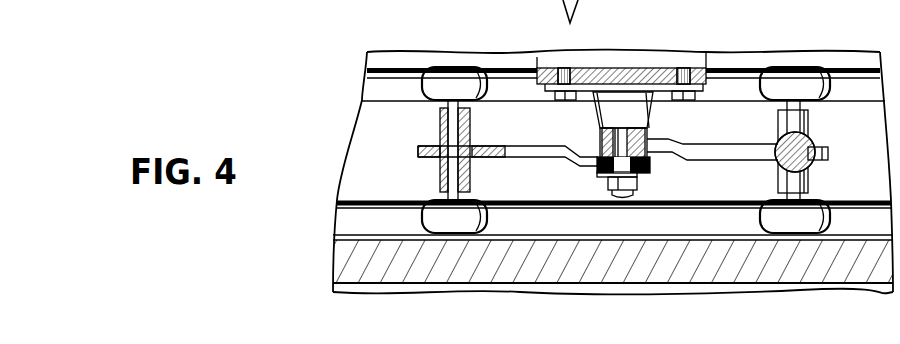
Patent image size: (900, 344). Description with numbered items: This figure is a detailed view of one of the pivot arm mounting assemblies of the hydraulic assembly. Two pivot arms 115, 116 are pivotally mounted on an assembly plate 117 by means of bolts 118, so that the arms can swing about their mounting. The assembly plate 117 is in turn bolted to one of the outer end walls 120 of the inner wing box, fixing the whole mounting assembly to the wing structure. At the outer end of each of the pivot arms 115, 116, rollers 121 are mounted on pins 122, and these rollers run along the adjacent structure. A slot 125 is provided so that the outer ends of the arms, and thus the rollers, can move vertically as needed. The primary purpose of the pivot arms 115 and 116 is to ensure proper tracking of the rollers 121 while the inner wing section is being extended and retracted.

The pivot arm 115 is at (524, 154).
The pivot arm 116 is at (734, 154).
The assembly plate 117 is at (654, 110).
The bolt 118 is at (639, 186).
The outer end wall 120 is at (632, 70).
The roller 121 is at (477, 99).
The pin 122 is at (453, 128).
The slot 125 is at (443, 152).